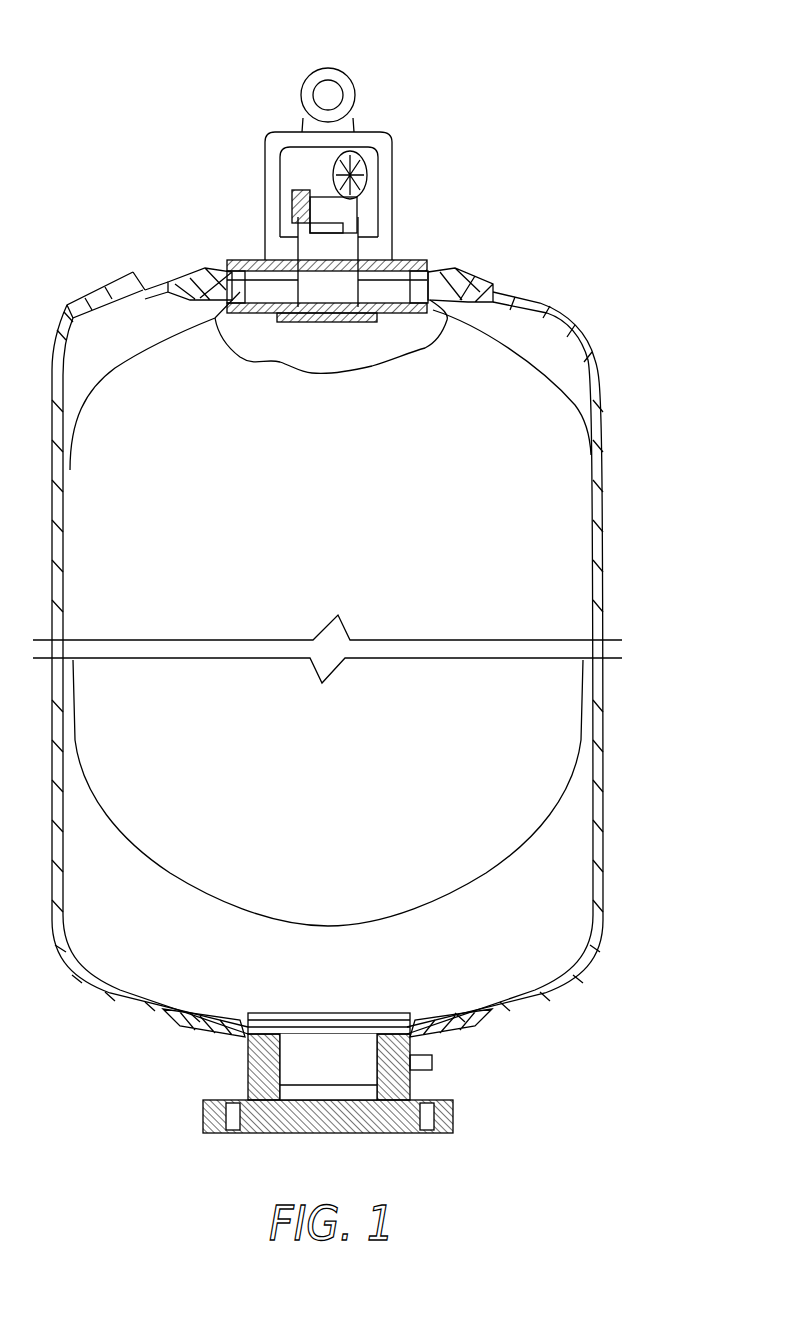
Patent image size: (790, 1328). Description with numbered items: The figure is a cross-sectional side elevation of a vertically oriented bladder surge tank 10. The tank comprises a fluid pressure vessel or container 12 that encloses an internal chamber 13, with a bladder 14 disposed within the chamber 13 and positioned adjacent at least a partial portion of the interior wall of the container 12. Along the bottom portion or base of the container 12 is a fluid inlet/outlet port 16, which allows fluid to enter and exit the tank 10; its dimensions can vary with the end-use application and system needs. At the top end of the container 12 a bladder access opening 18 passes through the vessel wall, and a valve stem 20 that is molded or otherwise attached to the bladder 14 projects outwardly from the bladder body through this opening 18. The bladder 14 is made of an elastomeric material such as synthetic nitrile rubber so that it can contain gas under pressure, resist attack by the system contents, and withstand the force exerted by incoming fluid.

The bladder surge tank 10 is at (643, 120).
The fluid pressure vessel or container 12 is at (546, 303).
The internal chamber 13 is at (542, 912).
The bladder 14 is at (547, 448).
The fluid inlet/outlet port 16 is at (297, 1058).
The bladder access opening 18 is at (252, 262).
The valve stem 20 is at (340, 293).